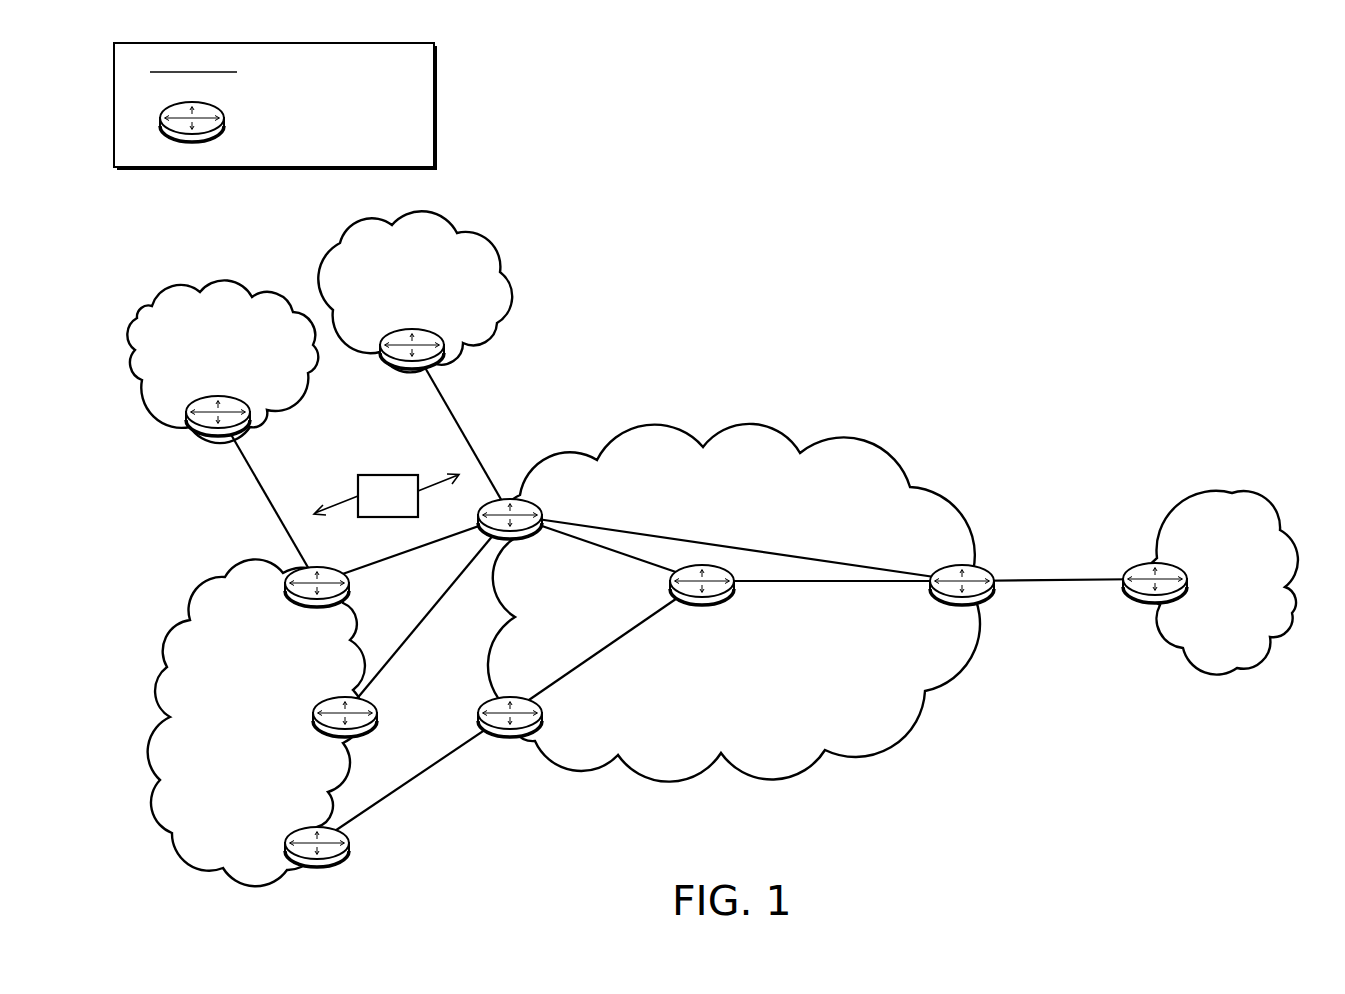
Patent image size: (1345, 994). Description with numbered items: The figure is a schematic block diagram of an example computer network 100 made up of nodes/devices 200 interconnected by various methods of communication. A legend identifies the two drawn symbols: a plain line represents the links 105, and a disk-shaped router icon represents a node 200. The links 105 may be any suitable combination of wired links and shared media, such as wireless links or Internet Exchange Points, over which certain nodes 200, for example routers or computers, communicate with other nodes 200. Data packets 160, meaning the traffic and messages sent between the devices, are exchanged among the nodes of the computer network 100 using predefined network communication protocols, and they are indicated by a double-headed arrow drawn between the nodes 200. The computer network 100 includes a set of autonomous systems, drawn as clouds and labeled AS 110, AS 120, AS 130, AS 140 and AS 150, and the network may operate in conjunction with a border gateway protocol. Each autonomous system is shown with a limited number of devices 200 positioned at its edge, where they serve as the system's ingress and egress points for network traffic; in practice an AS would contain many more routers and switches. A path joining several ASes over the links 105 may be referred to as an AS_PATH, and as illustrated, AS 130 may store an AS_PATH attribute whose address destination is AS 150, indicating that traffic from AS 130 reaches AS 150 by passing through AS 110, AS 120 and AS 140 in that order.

The computer network 100 is at (1253, 101).
The links 105 is at (262, 73).
The autonomous system 110 is at (257, 359).
The autonomous system 120 is at (450, 290).
The autonomous system 130 is at (275, 725).
The autonomous system 140 is at (795, 686).
The autonomous system 150 is at (1247, 610).
The data packets 160 is at (407, 505).
The node/device 200 is at (268, 122).